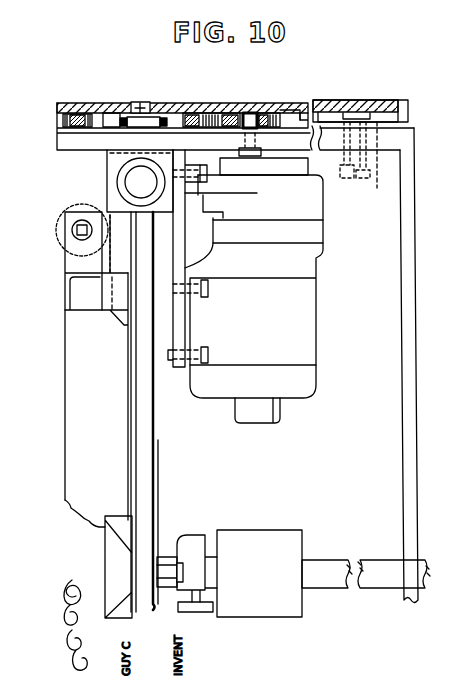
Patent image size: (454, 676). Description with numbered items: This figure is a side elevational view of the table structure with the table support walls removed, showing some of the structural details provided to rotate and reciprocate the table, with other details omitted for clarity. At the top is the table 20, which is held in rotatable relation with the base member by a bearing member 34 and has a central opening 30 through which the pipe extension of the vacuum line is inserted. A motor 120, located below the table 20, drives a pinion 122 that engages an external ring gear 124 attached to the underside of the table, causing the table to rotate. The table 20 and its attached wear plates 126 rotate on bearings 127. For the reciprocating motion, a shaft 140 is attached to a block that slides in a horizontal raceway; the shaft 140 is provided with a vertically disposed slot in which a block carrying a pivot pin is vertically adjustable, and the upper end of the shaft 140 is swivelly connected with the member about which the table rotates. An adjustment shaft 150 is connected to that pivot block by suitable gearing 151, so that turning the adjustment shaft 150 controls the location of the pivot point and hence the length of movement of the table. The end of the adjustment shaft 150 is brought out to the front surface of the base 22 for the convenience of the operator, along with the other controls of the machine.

The table 20 is at (72, 103).
The bearing member 34 is at (128, 118).
The central opening 30 is at (140, 104).
The external ring gear 124 is at (205, 113).
The pinion 122 is at (283, 113).
The wear plates 126 is at (376, 113).
The bearings 127 is at (378, 167).
The gearing 151 is at (100, 206).
The adjustment shaft 150 is at (80, 222).
The motor 120 is at (317, 312).
The shaft 140 is at (153, 433).
The base 22 is at (416, 600).